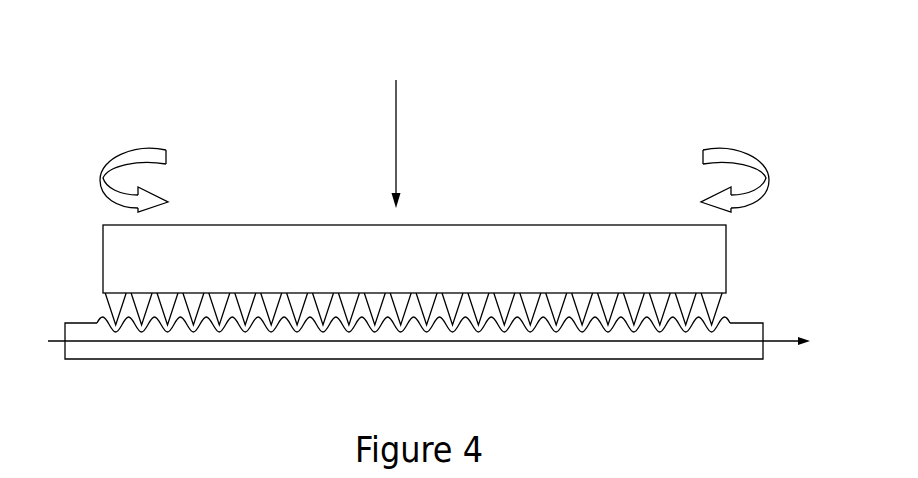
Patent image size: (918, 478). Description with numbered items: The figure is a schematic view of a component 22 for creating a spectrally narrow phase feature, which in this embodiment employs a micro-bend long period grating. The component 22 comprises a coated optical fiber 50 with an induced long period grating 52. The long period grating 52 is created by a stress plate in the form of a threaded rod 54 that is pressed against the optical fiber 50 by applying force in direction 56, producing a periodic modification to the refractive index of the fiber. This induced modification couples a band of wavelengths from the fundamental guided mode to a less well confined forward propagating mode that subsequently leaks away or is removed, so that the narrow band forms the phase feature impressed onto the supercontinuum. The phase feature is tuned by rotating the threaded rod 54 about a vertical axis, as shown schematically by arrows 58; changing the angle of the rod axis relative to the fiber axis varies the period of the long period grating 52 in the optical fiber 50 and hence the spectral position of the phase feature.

The component 22 is at (110, 59).
The coated optical fiber 50 is at (141, 388).
The long period grating 52 is at (82, 322).
The threaded rod 54 is at (243, 225).
The direction 56 is at (396, 116).
The arrows 58 is at (108, 160).